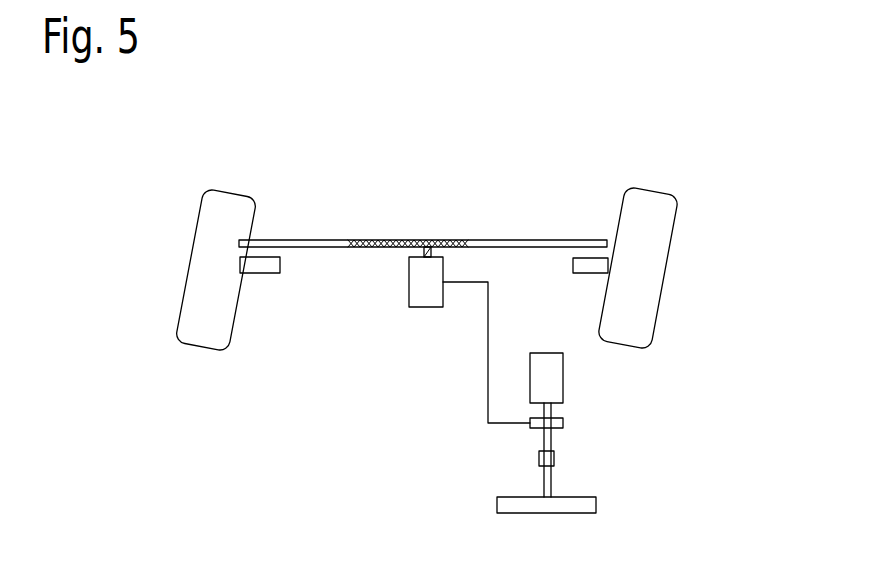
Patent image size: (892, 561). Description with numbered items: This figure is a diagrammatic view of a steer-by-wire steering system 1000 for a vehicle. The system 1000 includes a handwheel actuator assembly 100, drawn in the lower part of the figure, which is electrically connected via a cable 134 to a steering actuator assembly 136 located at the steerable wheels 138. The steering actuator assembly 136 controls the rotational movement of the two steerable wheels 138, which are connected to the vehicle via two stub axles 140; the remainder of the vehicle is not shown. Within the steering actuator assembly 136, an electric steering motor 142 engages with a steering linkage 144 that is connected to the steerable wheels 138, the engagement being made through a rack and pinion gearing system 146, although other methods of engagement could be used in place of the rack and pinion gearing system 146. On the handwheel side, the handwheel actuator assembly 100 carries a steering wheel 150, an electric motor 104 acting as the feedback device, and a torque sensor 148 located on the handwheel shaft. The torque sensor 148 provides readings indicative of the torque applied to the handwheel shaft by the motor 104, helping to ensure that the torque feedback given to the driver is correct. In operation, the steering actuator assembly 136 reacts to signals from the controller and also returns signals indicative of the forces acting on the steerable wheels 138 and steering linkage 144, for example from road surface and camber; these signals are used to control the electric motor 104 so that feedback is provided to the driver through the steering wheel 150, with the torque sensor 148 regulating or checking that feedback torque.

The steer-by-wire steering system 1000 is at (690, 98).
The handwheel actuator assembly 100 is at (603, 467).
The electric motor 104 is at (563, 377).
The cable 134 is at (488, 353).
The steering actuator assembly 136 is at (347, 182).
The steerable wheels 138 is at (189, 273).
The stub axles 140 is at (264, 250).
The steering motor 142 is at (408, 284).
The steering linkage 144 is at (338, 240).
The rack and pinion gearing system 146 is at (428, 247).
The torque sensor 148 is at (554, 458).
The steering wheel 150 is at (497, 504).